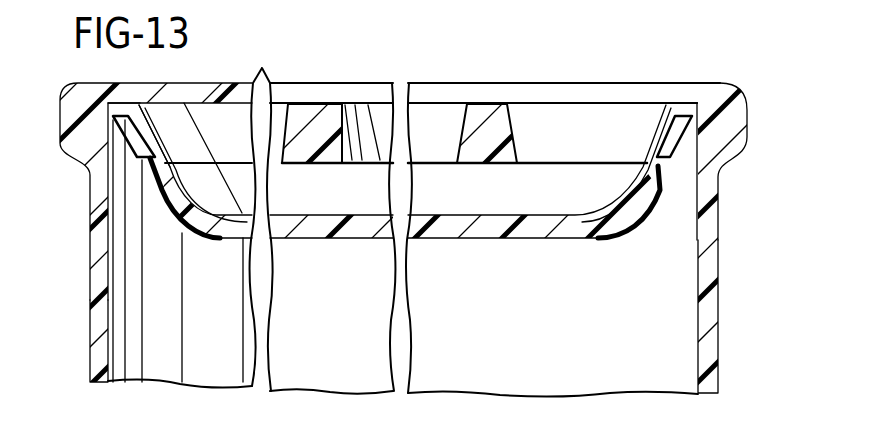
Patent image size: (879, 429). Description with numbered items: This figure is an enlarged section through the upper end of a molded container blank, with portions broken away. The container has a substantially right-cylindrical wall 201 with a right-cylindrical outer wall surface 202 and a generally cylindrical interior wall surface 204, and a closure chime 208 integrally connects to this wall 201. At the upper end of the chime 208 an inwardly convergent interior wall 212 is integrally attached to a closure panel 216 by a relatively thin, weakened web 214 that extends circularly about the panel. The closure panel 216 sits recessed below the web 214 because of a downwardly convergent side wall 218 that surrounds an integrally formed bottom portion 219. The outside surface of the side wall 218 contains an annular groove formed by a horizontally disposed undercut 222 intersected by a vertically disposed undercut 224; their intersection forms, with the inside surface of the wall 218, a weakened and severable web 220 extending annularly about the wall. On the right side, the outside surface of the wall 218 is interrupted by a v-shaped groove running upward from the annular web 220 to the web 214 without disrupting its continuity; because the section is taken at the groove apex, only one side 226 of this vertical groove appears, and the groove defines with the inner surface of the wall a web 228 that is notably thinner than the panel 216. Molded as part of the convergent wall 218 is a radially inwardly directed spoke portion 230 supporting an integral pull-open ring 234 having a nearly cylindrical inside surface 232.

The right-cylindrical wall 201 is at (96, 277).
The outer wall surface 202 is at (92, 328).
The interior wall surface 204 is at (712, 323).
The closure chime 208 is at (747, 118).
The inwardly convergent interior wall 212 is at (268, 217).
The weakened web 214 is at (115, 100).
The closure panel 216 is at (426, 211).
The downwardly convergent side wall 218 is at (160, 100).
The bottom portion 219 is at (434, 240).
The severable web 220 is at (160, 160).
The horizontally disposed undercut 222 is at (140, 160).
The vertically disposed undercut 224 is at (668, 176).
The side of vertically disposed groove 226 is at (663, 146).
The web 228 is at (663, 113).
The spoke portion 230 is at (558, 115).
The inside surface 232 is at (420, 112).
The pull-open ring 234 is at (322, 108).